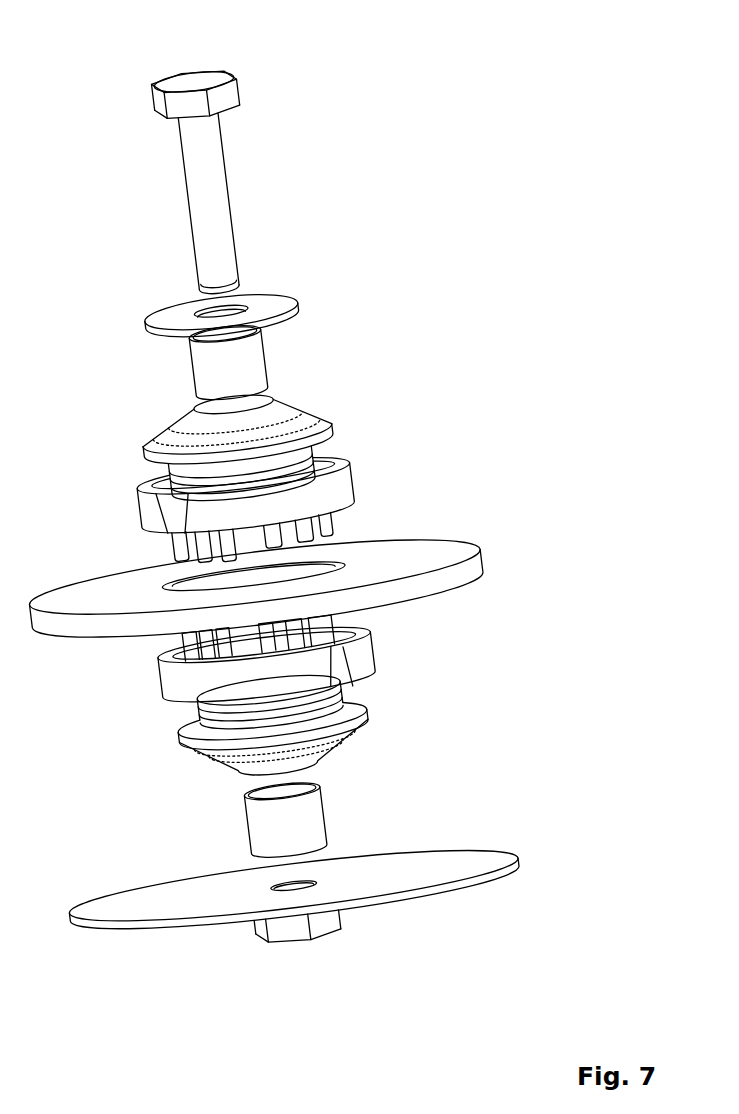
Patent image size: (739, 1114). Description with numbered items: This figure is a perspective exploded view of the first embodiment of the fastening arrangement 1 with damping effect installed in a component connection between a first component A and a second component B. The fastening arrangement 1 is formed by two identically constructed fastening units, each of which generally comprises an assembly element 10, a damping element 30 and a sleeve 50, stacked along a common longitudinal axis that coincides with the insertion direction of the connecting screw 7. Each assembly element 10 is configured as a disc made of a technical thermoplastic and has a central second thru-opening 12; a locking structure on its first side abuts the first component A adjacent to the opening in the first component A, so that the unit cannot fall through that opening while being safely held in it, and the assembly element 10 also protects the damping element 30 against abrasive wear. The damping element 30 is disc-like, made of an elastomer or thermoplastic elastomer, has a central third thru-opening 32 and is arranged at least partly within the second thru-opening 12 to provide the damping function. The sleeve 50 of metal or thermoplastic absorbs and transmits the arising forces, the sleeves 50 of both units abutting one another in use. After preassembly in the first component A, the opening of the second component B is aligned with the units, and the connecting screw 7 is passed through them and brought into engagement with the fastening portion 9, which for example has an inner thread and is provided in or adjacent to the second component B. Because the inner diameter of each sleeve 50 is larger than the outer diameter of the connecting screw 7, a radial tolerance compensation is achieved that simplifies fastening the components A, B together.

The fastening arrangement 1 is at (456, 23).
The connecting screw 7 is at (208, 193).
The fastening portion 9 is at (337, 923).
The assembly element 10 is at (340, 490).
The second thru-opening 12 is at (187, 651).
The damping element 30 is at (332, 422).
The third thru-opening 32 is at (265, 404).
The sleeve 50 is at (250, 360).
The first component A is at (470, 567).
The second component B is at (503, 877).